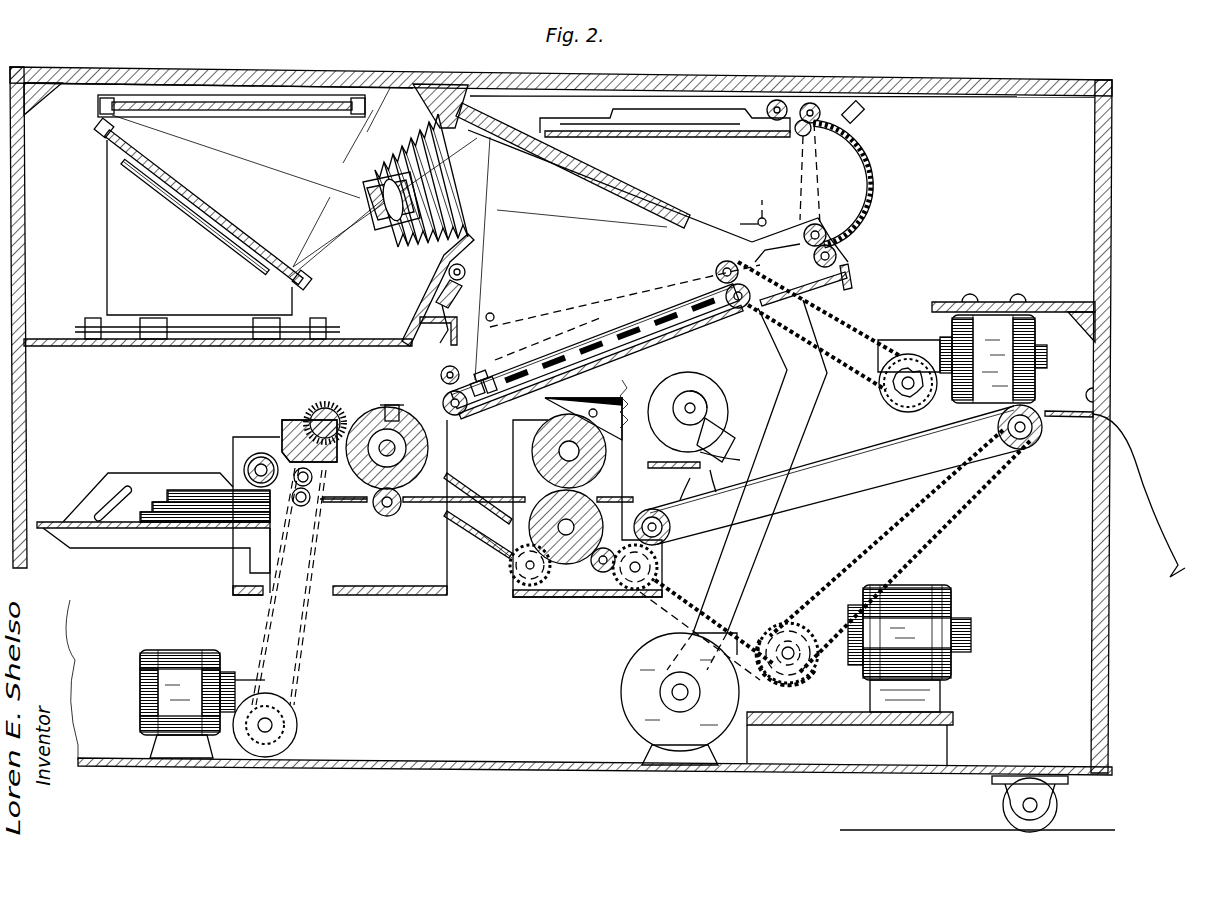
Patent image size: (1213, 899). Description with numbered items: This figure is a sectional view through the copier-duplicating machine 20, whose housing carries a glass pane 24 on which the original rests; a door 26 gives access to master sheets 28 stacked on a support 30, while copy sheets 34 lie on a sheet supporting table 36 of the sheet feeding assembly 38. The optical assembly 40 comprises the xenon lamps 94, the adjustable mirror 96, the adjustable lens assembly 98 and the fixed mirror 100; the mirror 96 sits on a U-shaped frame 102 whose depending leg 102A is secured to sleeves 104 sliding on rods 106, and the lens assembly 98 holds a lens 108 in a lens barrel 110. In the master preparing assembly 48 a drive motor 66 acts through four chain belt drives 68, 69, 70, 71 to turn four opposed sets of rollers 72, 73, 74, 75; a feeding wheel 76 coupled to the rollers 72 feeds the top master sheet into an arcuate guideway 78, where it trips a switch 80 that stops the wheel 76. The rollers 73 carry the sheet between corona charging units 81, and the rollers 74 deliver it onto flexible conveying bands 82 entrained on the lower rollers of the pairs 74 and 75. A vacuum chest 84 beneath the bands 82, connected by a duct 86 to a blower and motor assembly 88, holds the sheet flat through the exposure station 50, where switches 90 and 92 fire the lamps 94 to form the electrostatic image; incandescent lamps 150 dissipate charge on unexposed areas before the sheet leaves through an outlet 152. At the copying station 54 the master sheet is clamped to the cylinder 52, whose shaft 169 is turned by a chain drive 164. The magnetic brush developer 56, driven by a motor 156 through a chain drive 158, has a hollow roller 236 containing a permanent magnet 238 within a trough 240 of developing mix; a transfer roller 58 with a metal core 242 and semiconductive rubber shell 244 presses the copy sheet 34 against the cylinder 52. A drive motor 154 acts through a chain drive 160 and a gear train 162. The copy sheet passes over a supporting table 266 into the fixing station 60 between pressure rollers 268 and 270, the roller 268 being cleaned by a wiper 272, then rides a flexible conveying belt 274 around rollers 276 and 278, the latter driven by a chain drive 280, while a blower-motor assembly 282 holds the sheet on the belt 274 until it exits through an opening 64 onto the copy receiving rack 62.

The copier-duplicating machine 20 is at (1107, 73).
The transparent member or glass pane 24 is at (180, 70).
The door 26 is at (712, 82).
The master sheet 28 is at (578, 118).
The support 30 is at (684, 139).
The copy sheet 34 is at (182, 490).
The sheet supporting table 36 is at (48, 520).
The sheet feeding assembly 38 is at (190, 570).
The optical assembly 40 is at (338, 268).
The master preparing assembly 48 is at (885, 240).
The exposure station 50 is at (716, 347).
The drum or cylinder 52 is at (373, 400).
The copying station 54 is at (395, 600).
The magnetic brush developer 56 is at (276, 413).
The pressure roller 58 is at (382, 516).
The fixing station 60 is at (536, 612).
The copy receiving rack 62 is at (1145, 475).
The opening 64 is at (1105, 398).
The drive motor 66 is at (1000, 302).
The chain belt drive 68 is at (863, 343).
The chain belt drive 69 is at (586, 300).
The chain belt drive 70 is at (756, 202).
The chain belt drive 71 is at (800, 157).
The opposed rollers 72 is at (815, 120).
The opposed rollers 73 is at (838, 257).
The opposed rollers 74 is at (723, 262).
The opposed rollers 75 is at (448, 366).
The master sheet feeding roller or wheel 76 is at (810, 103).
The arcuate guide channel or guideway 78 is at (872, 168).
The switch 80 is at (860, 105).
The corona charging units 81 is at (826, 292).
The conveying bands 82 is at (735, 318).
The vacuum chest 84 is at (688, 312).
The duct 86 is at (822, 421).
The blower and motor assembly 88 is at (610, 695).
The switch 90 is at (478, 377).
The switch 92 is at (495, 378).
The xenon lamps 94 is at (127, 100).
The adjustable mirror 96 is at (108, 140).
The adjustable lens assembly 98 is at (419, 258).
The fixed mirror 100 is at (603, 190).
The U-shaped supporting bracket or frame 102 is at (150, 185).
The depending leg 102A is at (120, 242).
The sleeves 104 is at (147, 339).
The rods 106 is at (88, 300).
The lens 108 is at (398, 150).
The lens barrel 110 is at (363, 192).
The incandescent lamps 150 is at (466, 272).
The outlet 152 is at (428, 340).
The drive motor 154 is at (922, 585).
The drive motor 156 is at (168, 652).
The chain drive 158 is at (300, 668).
The chain drive 160 is at (660, 612).
The gear train 162 is at (578, 600).
The chain drive 164 is at (480, 536).
The shaft 169 is at (396, 448).
The hollow roller or cylinder 236 is at (324, 404).
The permanent magnet 238 is at (312, 416).
The trough 240 is at (280, 423).
The metal core or shaft 242 is at (378, 545).
The semiconductive rubber shell 244 is at (360, 503).
The supporting table 266 is at (515, 497).
The pressure roller 268 is at (607, 475).
The pressure roller 270 is at (520, 600).
The wiper 272 is at (570, 393).
The flexible conveying belt 274 is at (833, 500).
The roller 276 is at (668, 540).
The roller 278 is at (1032, 444).
The chain drive 280 is at (970, 502).
The blower-motor assembly 282 is at (707, 400).